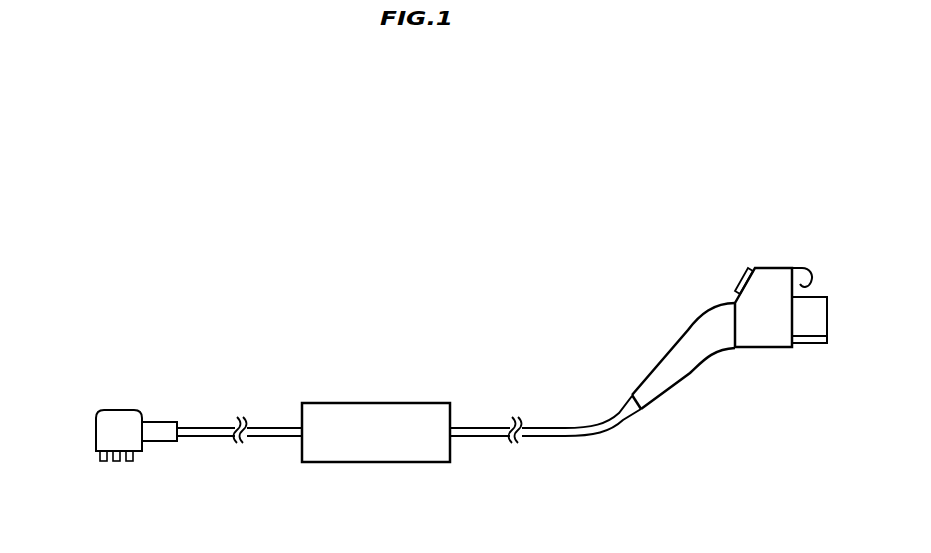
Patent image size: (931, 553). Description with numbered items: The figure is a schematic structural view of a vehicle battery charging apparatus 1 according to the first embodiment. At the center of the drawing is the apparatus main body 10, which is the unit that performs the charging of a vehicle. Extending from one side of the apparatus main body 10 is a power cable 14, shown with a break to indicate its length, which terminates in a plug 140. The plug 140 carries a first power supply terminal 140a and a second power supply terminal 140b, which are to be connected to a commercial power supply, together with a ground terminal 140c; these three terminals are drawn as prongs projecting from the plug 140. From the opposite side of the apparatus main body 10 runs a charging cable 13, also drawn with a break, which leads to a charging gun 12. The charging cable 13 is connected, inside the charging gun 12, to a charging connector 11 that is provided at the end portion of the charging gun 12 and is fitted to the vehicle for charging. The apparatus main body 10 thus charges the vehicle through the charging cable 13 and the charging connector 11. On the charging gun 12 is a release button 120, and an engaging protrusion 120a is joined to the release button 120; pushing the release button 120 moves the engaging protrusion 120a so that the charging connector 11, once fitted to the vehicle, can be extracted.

The vehicle battery charging apparatus 1 is at (277, 232).
The apparatus main body 10 is at (412, 403).
The charging connector 11 is at (820, 343).
The charging gun 12 is at (693, 330).
The release button 120 is at (740, 275).
The engaging protrusion 120a is at (802, 268).
The charging cable 13 is at (623, 405).
The power cable 14 is at (277, 428).
The plug 140 is at (113, 410).
The first power supply terminal 140a is at (132, 465).
The second power supply terminal 140b is at (117, 465).
The ground terminal 140c is at (103, 465).